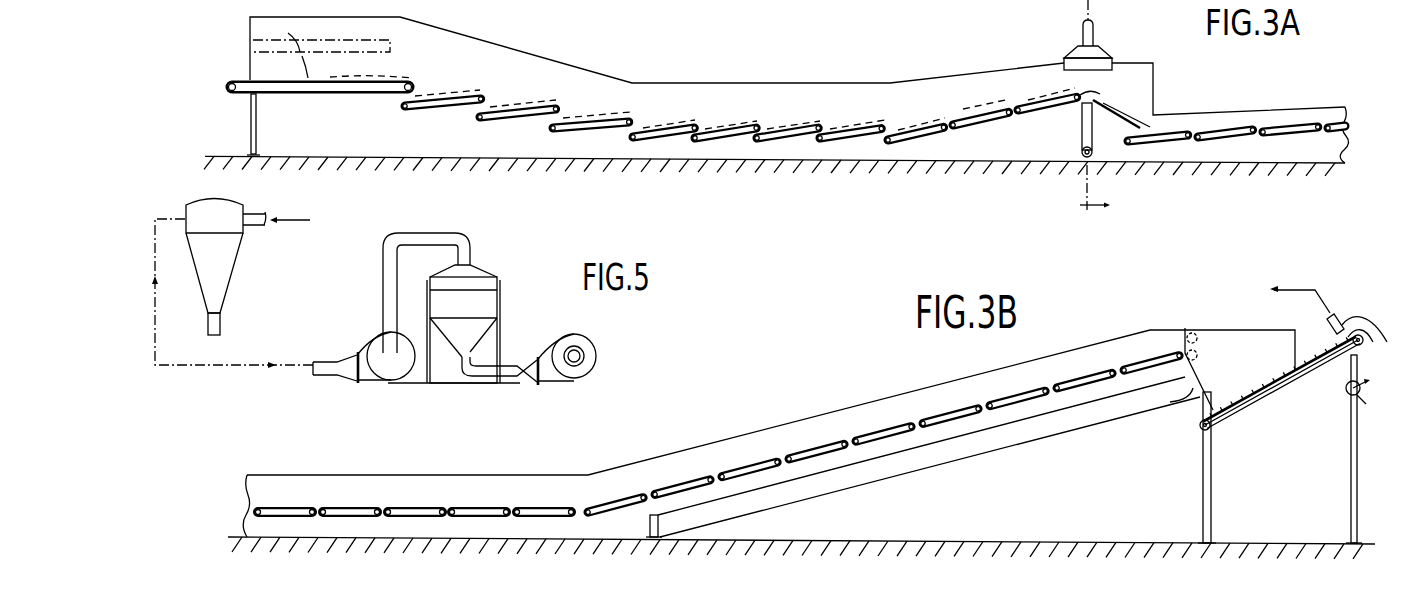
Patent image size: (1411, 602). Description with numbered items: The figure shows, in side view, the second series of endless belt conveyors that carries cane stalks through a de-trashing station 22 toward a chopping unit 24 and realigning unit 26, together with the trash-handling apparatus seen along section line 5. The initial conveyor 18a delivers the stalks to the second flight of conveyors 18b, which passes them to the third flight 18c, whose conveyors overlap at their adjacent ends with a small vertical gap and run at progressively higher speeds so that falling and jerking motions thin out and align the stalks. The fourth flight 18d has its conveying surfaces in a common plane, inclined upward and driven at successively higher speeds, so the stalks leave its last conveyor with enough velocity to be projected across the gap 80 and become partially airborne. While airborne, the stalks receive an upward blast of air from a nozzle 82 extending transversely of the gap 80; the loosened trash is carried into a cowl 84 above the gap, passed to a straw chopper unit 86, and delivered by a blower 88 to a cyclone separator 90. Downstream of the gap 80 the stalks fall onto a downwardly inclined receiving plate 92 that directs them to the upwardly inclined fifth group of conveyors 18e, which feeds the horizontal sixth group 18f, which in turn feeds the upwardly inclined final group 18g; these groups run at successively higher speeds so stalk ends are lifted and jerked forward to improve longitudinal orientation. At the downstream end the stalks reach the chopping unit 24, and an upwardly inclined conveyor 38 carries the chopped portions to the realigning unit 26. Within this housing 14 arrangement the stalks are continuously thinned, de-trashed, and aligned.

In FIG. 3A, the section line 5— 5 is at (1101, 193).
In FIG. 3A, the dryer housing 14 is at (799, 81).
In FIG. 3A, the initial conveyor 18a is at (321, 97).
In FIG. 3A, the second flight of conveyors 18b is at (630, 174).
In FIG. 3A, the third flight of conveyors 18c is at (885, 174).
In FIG. 3A, the fourth flight of conveyors 18d is at (1080, 174).
In FIG. 3A, the fifth group of conveyors 18e is at (1320, 178).
In FIG. 3A, the sixth group of conveyors 18f is at (1357, 180).
In FIG. 3B, the sixth group of conveyors 18f is at (250, 521).
In FIG. 3B, the final conveyor group 18g is at (958, 459).
In FIG. 3A, the de-trashing station 22 is at (1088, 35).
In FIG. 3B, the chopping unit 24 is at (1195, 326).
In FIG. 3B, the realigning unit 26 is at (1350, 310).
In FIG. 3B, the upwardly inclined conveyor 38 is at (1270, 397).
In FIG. 3A, the gap 80 is at (1090, 95).
In FIG. 3A, the nozzle 82 is at (1083, 123).
In FIG. 3A, the cowl 84 is at (1078, 53).
In FIG. 5, the straw chopper unit 86 is at (230, 249).
In FIG. 5, the blower 88 is at (378, 348).
In FIG. 5, the cyclone separator 90 is at (487, 302).
In FIG. 3A, the receiving plate 92 is at (1118, 121).